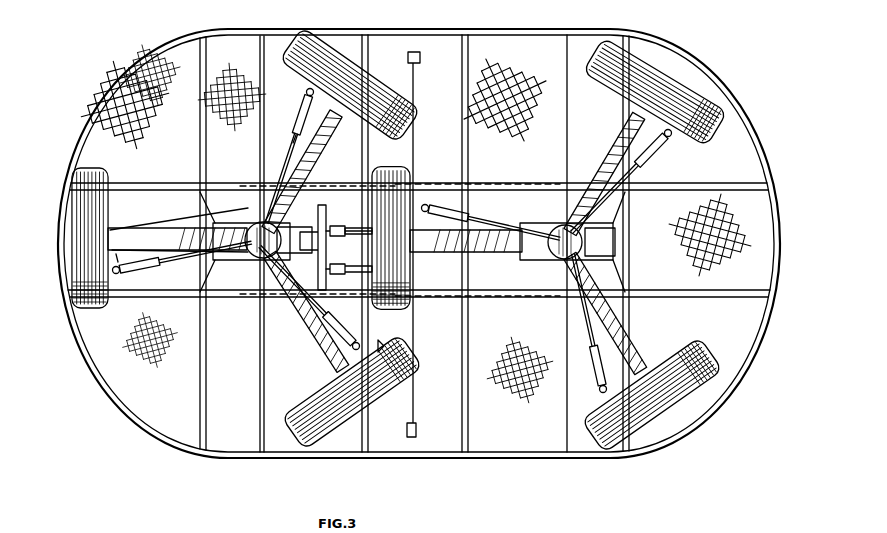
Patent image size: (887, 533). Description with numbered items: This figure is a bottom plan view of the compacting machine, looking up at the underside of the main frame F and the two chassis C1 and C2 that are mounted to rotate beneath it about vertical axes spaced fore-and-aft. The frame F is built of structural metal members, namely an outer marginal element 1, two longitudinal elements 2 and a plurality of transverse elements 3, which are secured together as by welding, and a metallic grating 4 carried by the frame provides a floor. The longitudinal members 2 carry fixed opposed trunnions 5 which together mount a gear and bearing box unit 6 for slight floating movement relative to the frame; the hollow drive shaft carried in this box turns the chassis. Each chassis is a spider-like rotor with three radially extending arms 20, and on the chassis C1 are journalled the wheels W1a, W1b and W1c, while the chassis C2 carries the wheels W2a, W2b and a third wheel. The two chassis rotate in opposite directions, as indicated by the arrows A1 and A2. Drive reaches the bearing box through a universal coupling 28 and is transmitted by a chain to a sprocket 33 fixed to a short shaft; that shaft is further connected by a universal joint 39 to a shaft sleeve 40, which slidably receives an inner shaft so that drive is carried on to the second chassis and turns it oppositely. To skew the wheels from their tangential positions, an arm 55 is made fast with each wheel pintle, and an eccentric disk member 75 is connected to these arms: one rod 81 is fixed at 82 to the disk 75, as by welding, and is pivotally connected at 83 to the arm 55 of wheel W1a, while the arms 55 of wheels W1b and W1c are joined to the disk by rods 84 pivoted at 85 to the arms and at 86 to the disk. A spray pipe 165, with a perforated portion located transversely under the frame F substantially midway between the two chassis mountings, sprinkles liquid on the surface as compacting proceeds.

The marginal element 1 is at (192, 38).
The longitudinal element 2 is at (498, 190).
The transverse element 3 is at (210, 72).
The metallic grating 4 is at (510, 80).
The trunnion 5 is at (248, 190).
The gear and bearing box unit 6 is at (215, 197).
The radially extending arm 20 is at (322, 170).
The universal coupling 28 is at (336, 280).
The sprocket 33 is at (322, 212).
The universal joint 39 is at (338, 230).
The shaft sleeve 40 is at (352, 244).
The arm 55 is at (306, 92).
The disk member 75 is at (283, 238).
The rod 81 is at (350, 340).
The fixed connection 82 is at (413, 240).
The pivotal connection 83 is at (366, 352).
The rod 84 is at (294, 142).
The pivot 85 is at (300, 97).
The pivot 86 is at (252, 200).
The spray pipe 165 is at (416, 395).
The wheel W1a is at (320, 424).
The wheel W1b is at (75, 213).
The wheel W1c is at (400, 100).
The wheel W2a is at (390, 172).
The wheel W2b is at (705, 112).
The arrow A1 is at (362, 58).
The arrow A2 is at (642, 32).
The chassis C1 is at (297, 330).
The chassis C2 is at (635, 338).
The main frame F is at (760, 150).